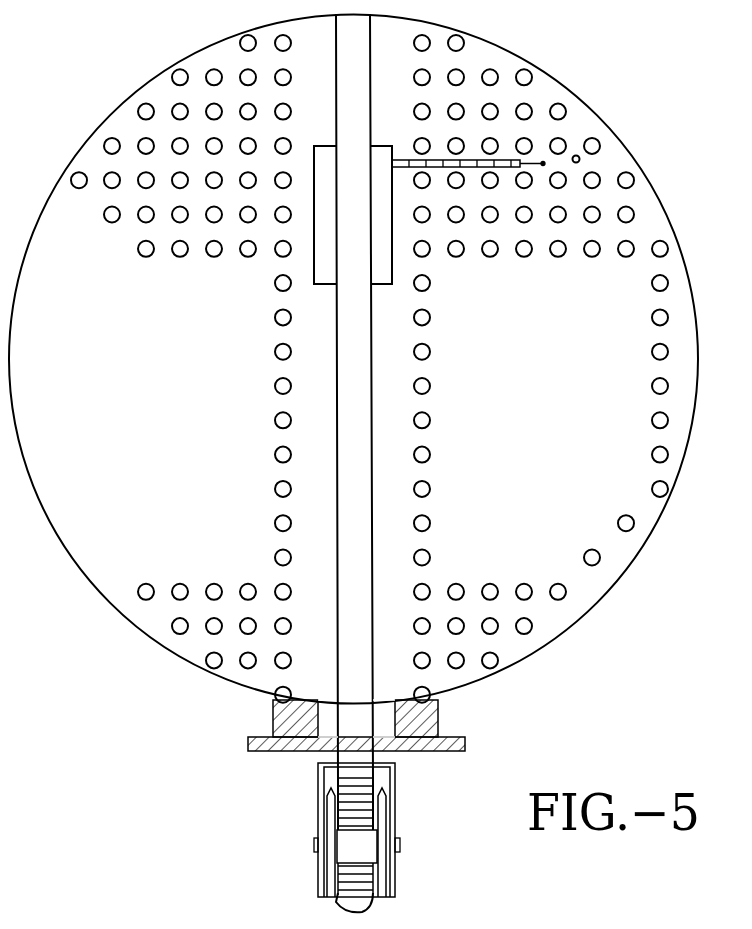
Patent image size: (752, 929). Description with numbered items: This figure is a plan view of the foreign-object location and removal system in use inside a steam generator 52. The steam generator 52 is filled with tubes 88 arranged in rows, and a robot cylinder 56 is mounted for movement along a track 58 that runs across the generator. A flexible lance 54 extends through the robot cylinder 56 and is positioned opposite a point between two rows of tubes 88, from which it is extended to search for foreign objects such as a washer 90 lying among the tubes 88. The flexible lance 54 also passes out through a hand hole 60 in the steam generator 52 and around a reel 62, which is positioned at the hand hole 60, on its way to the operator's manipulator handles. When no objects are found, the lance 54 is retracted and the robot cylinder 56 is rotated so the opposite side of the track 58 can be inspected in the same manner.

The steam generator 52 is at (153, 647).
The flexible lance 54 is at (470, 158).
The robot cylinder 56 is at (323, 255).
The track 58 is at (350, 377).
The hand hole 60 is at (332, 752).
The reel 62 is at (328, 838).
The tube 88 is at (558, 258).
The washer 90 is at (577, 154).